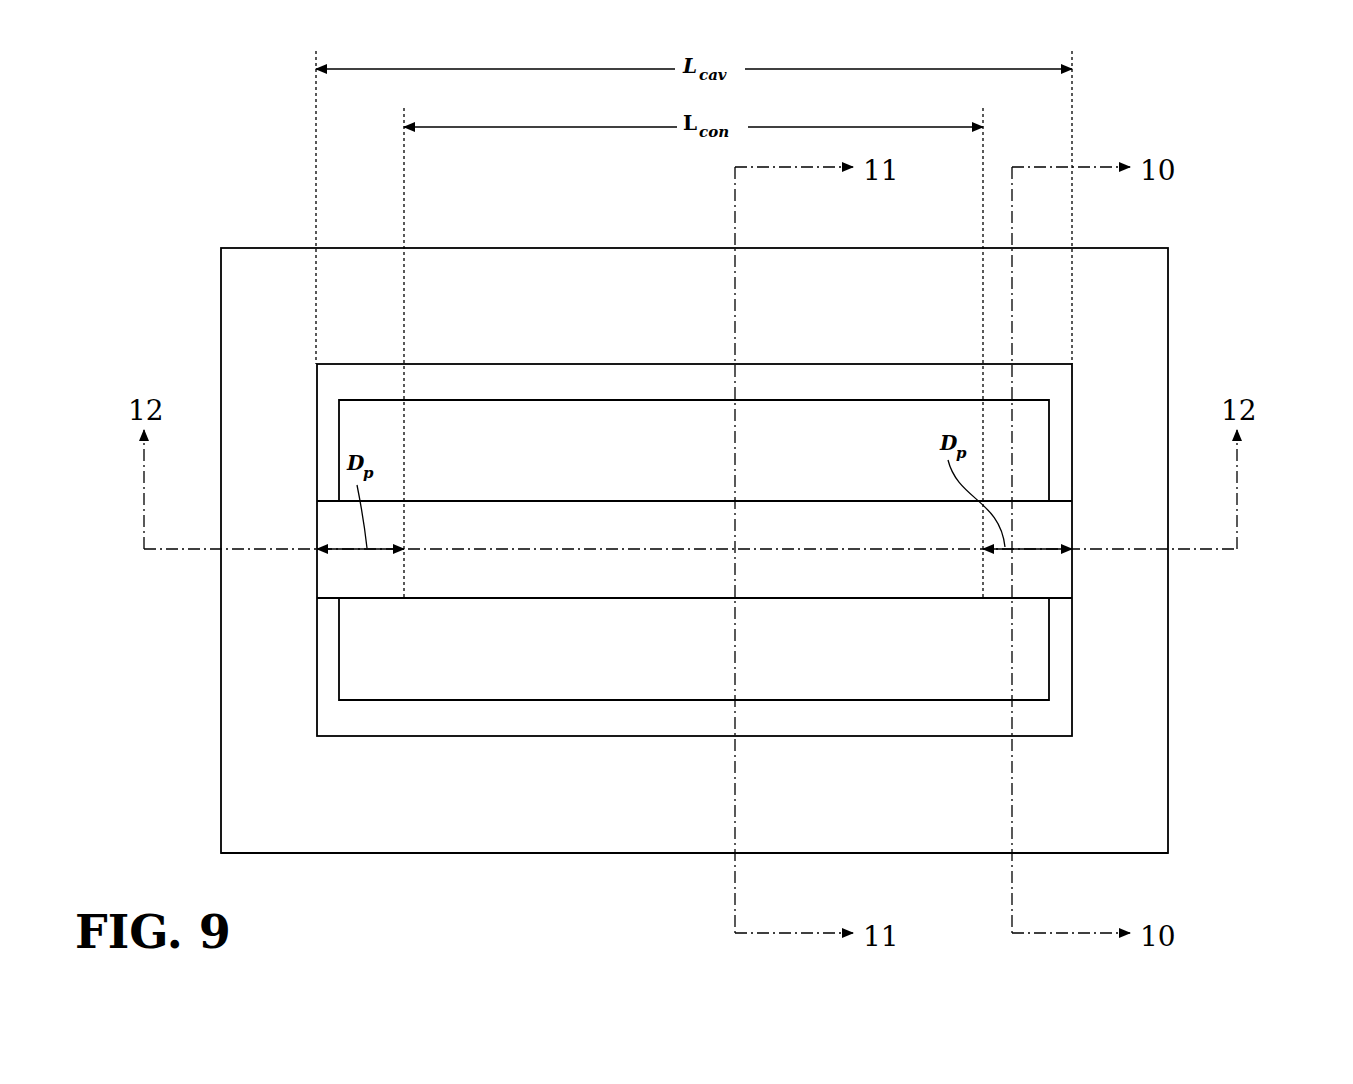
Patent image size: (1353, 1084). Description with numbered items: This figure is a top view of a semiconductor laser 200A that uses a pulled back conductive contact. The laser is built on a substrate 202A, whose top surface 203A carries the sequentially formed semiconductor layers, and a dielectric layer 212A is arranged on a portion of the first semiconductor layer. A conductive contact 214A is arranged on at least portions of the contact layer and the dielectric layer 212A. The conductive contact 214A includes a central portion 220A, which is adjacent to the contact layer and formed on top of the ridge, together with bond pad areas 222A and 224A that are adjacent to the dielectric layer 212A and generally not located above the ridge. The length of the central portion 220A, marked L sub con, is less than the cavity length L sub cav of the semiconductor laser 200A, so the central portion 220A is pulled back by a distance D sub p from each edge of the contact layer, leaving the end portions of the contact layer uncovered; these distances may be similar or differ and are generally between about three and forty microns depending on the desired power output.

The semiconductor laser 200A is at (1257, 127).
The substrate 202A is at (1140, 335).
The top surface 203A is at (1133, 813).
The dielectric layer 212A is at (327, 573).
The conductive contact 214A is at (453, 572).
The central portion 220A is at (593, 568).
The bond pad area 222A is at (375, 650).
The bond pad area 224A is at (557, 432).